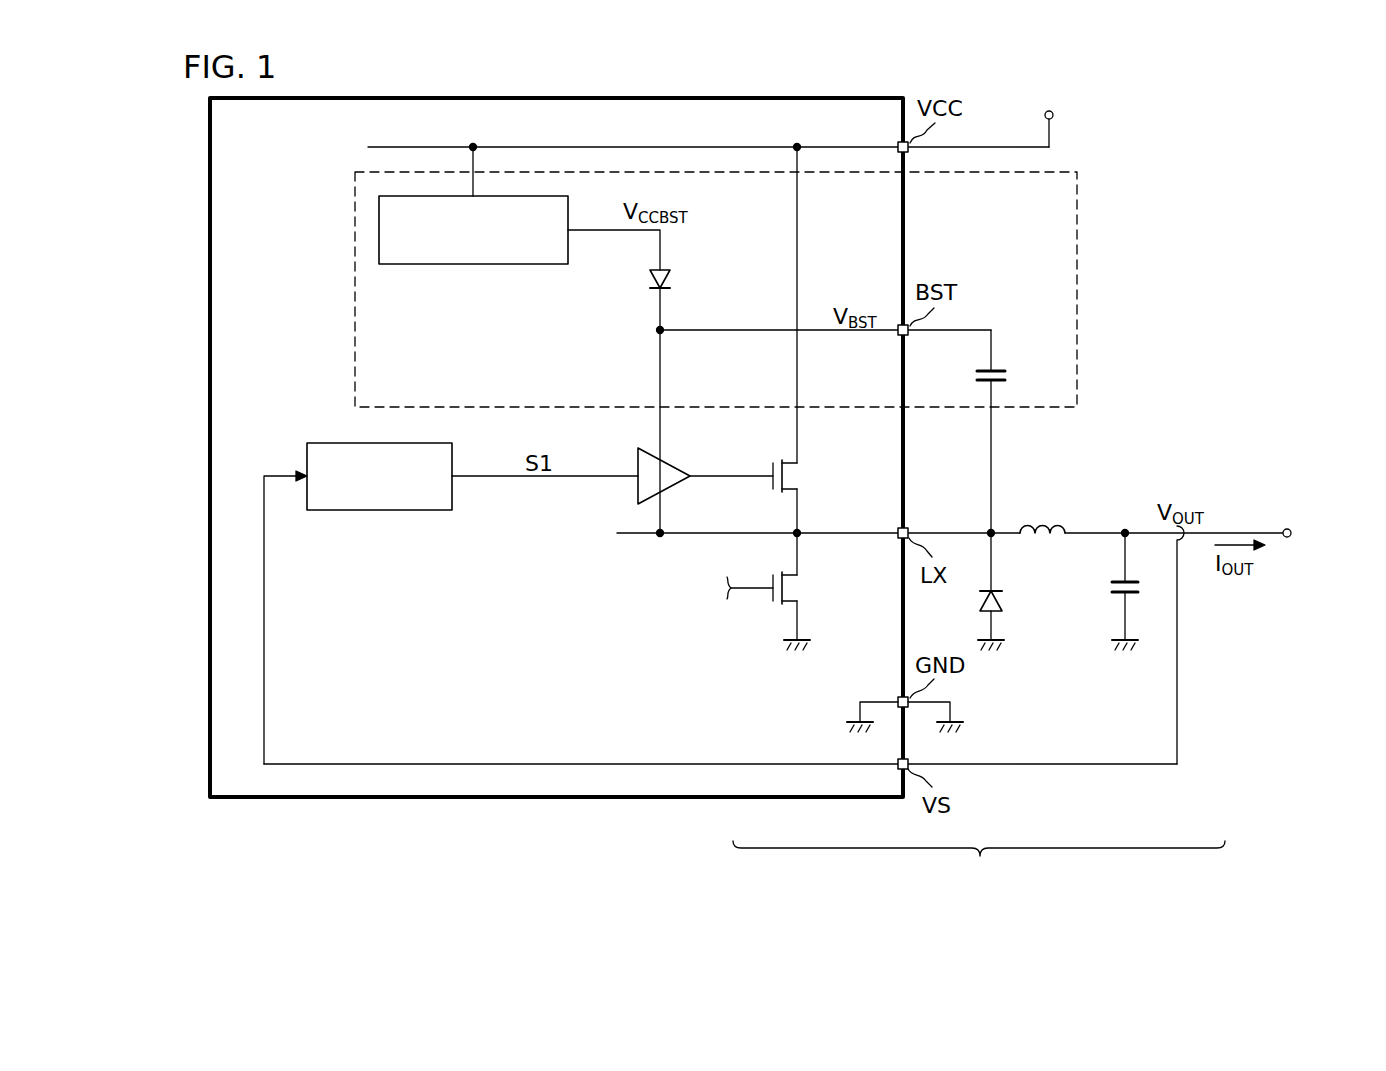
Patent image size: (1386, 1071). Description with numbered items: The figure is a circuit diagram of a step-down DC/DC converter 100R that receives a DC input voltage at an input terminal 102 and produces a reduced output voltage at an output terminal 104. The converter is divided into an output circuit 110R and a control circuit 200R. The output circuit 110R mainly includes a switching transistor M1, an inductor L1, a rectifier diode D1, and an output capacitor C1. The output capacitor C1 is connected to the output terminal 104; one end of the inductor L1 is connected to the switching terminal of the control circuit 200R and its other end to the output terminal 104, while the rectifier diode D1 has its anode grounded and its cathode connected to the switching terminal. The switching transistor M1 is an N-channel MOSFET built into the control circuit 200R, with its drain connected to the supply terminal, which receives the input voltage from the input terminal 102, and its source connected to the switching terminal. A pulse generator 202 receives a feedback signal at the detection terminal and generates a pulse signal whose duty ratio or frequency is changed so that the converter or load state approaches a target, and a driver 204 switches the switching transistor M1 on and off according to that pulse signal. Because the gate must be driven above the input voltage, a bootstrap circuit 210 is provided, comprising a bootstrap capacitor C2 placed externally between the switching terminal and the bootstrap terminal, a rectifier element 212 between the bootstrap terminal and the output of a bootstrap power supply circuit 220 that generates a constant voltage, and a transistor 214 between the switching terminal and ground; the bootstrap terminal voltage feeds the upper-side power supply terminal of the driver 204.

The DC/DC converter 100R is at (1362, 128).
The input terminal 102 is at (1054, 116).
The output terminal 104 is at (1290, 526).
The output circuit 110R is at (979, 863).
The control circuit 200R is at (406, 799).
The pulse generator 202 is at (378, 511).
The driver 204 is at (667, 462).
The bootstrap circuit 210 is at (355, 288).
The rectifier element 212 is at (673, 276).
The transistor 214 is at (805, 584).
The bootstrap power supply circuit 220 is at (452, 265).
The switching transistor M1 is at (803, 470).
The output capacitor C1 is at (1108, 586).
The bootstrap capacitor C2 is at (1008, 374).
The rectifier diode D1 is at (1008, 600).
The inductor L1 is at (1047, 520).